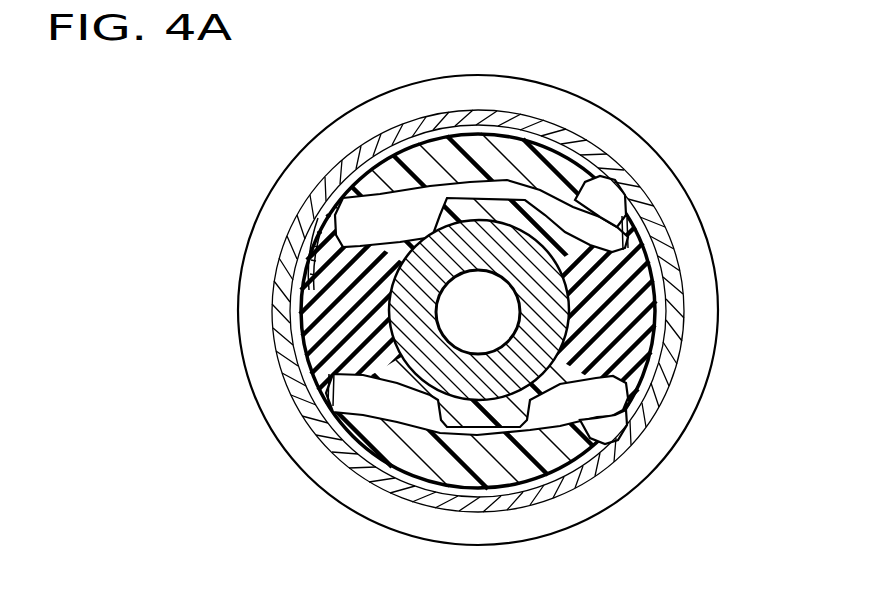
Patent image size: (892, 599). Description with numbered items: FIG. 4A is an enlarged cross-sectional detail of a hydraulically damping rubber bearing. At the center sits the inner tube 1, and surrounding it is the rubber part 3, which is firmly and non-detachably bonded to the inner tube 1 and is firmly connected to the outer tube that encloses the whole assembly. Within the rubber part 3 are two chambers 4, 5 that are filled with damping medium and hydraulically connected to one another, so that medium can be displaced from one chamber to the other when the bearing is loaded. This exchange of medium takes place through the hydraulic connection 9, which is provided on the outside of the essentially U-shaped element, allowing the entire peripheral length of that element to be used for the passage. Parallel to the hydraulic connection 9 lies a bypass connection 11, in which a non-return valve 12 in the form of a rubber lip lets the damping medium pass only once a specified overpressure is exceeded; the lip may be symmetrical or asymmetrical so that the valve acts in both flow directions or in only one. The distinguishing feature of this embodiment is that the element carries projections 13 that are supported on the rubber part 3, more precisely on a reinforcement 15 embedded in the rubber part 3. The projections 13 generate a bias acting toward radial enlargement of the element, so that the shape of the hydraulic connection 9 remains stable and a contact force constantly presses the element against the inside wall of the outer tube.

The inner tube 1 is at (403, 326).
The rubber part 3 is at (353, 270).
The chamber 4 is at (357, 221).
The chamber 5 is at (357, 397).
The hydraulic connection 9 is at (328, 200).
The bypass connection 11 is at (655, 363).
The non-return valve 12 is at (682, 290).
The projections 13 is at (618, 192).
The reinforcement 15 is at (632, 223).